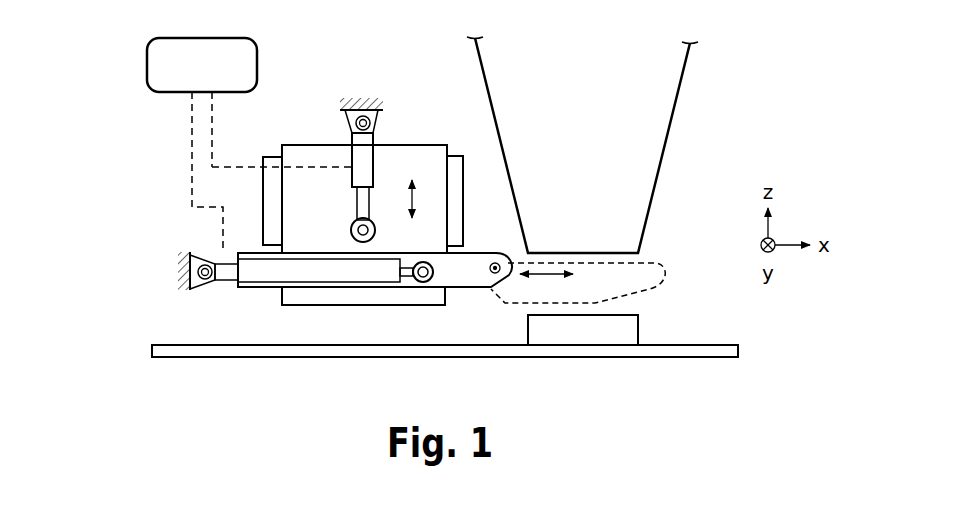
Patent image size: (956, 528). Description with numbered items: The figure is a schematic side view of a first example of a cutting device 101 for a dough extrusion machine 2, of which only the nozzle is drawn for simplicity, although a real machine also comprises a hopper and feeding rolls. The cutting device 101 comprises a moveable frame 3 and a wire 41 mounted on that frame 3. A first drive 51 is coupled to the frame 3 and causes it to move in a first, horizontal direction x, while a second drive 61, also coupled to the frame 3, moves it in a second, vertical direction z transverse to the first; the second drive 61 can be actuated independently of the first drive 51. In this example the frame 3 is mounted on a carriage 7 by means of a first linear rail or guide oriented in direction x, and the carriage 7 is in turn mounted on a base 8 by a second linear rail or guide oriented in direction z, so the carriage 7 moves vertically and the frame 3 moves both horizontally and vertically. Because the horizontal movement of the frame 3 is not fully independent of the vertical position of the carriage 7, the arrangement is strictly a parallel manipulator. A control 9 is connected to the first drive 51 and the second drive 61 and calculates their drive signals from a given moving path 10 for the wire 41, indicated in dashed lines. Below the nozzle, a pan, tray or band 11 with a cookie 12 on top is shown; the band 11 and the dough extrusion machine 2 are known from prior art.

The cutting device 101 is at (138, 162).
The control 9 is at (243, 58).
The carriage 7 is at (322, 155).
The base 8 is at (455, 188).
The second drive 61 is at (365, 162).
The first drive 51 is at (268, 272).
The frame 3 is at (478, 288).
The wire 41 is at (503, 258).
The dough extrusion machine 2 is at (698, 117).
The moving path 10 is at (650, 283).
The cookie 12 is at (568, 335).
The band 11 is at (685, 352).